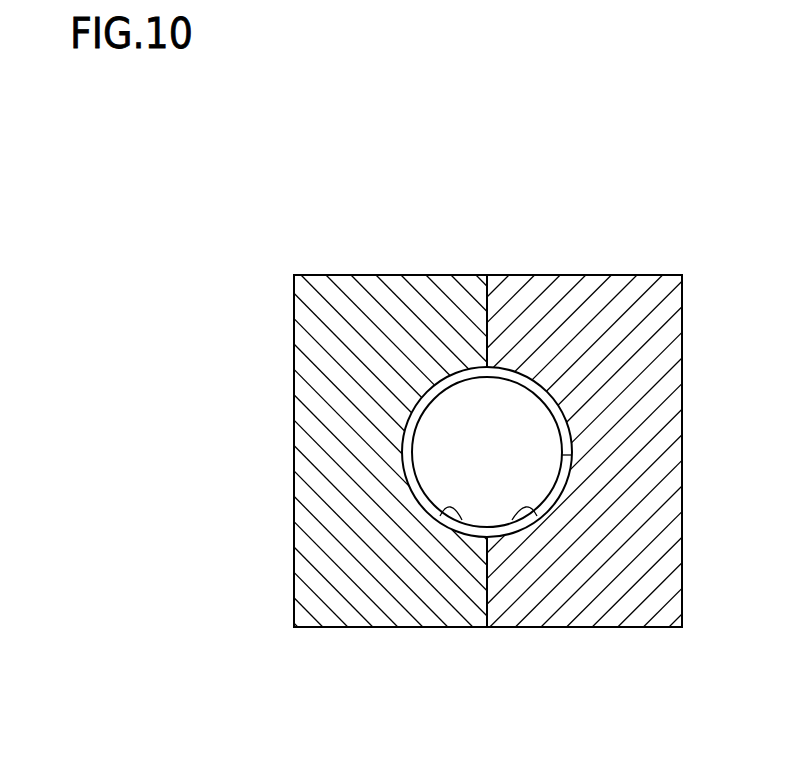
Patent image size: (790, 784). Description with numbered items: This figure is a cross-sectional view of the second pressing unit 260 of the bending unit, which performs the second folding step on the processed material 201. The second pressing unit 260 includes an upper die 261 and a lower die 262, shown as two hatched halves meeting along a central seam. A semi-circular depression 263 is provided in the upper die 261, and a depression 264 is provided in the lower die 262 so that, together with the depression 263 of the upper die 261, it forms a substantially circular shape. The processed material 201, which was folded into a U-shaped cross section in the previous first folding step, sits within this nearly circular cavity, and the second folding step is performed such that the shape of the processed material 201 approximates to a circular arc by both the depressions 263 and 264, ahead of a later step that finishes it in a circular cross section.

The second pressing unit 260 is at (228, 297).
The processed material 201 is at (404, 461).
The upper die 261 is at (341, 613).
The lower die 262 is at (630, 618).
The semi-circular depression 263 is at (440, 516).
The depression 264 is at (537, 516).